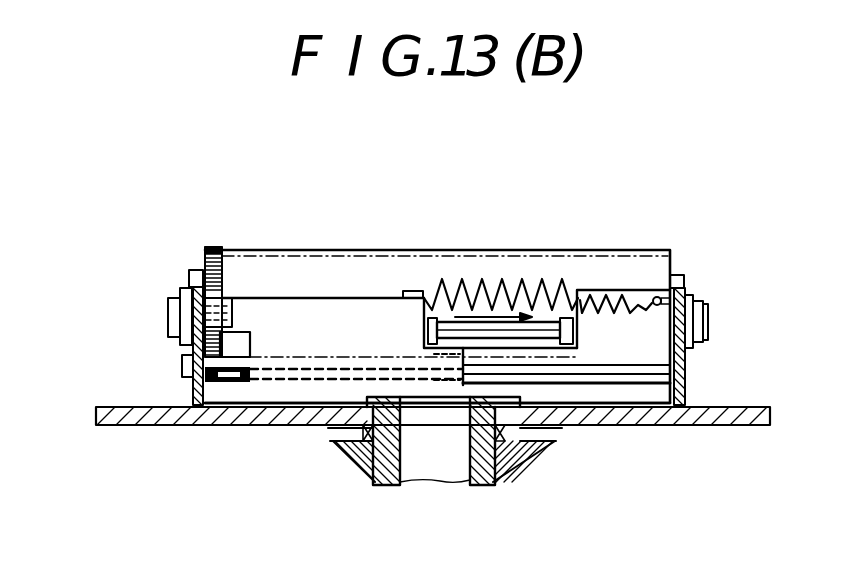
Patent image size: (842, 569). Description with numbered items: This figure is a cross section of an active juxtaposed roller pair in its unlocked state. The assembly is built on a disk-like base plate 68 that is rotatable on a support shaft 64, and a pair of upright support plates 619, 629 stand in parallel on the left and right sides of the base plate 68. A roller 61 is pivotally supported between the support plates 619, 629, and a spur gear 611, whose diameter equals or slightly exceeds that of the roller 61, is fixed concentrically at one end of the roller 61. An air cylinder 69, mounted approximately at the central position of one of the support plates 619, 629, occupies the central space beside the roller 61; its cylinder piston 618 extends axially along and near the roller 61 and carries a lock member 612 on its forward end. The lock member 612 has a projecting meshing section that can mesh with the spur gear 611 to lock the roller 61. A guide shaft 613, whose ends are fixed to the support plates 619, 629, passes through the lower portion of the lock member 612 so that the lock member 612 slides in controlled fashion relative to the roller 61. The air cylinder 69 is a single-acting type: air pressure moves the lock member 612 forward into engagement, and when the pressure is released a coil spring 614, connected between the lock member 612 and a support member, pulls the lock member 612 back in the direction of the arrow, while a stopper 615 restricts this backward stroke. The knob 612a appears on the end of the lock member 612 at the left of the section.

The roller 61 is at (653, 273).
The spur gear 611 is at (210, 247).
The lock member 612 is at (358, 310).
The knob 612a is at (190, 290).
The guide shaft 613 is at (625, 365).
The coil spring 614 is at (512, 280).
The stopper 615 is at (450, 387).
The cylinder piston 618 is at (558, 323).
The support plate 619 is at (690, 325).
The support plate 629 is at (180, 343).
The support shaft 64 is at (353, 465).
The base plate 68 is at (178, 417).
The air cylinder 69 is at (640, 343).